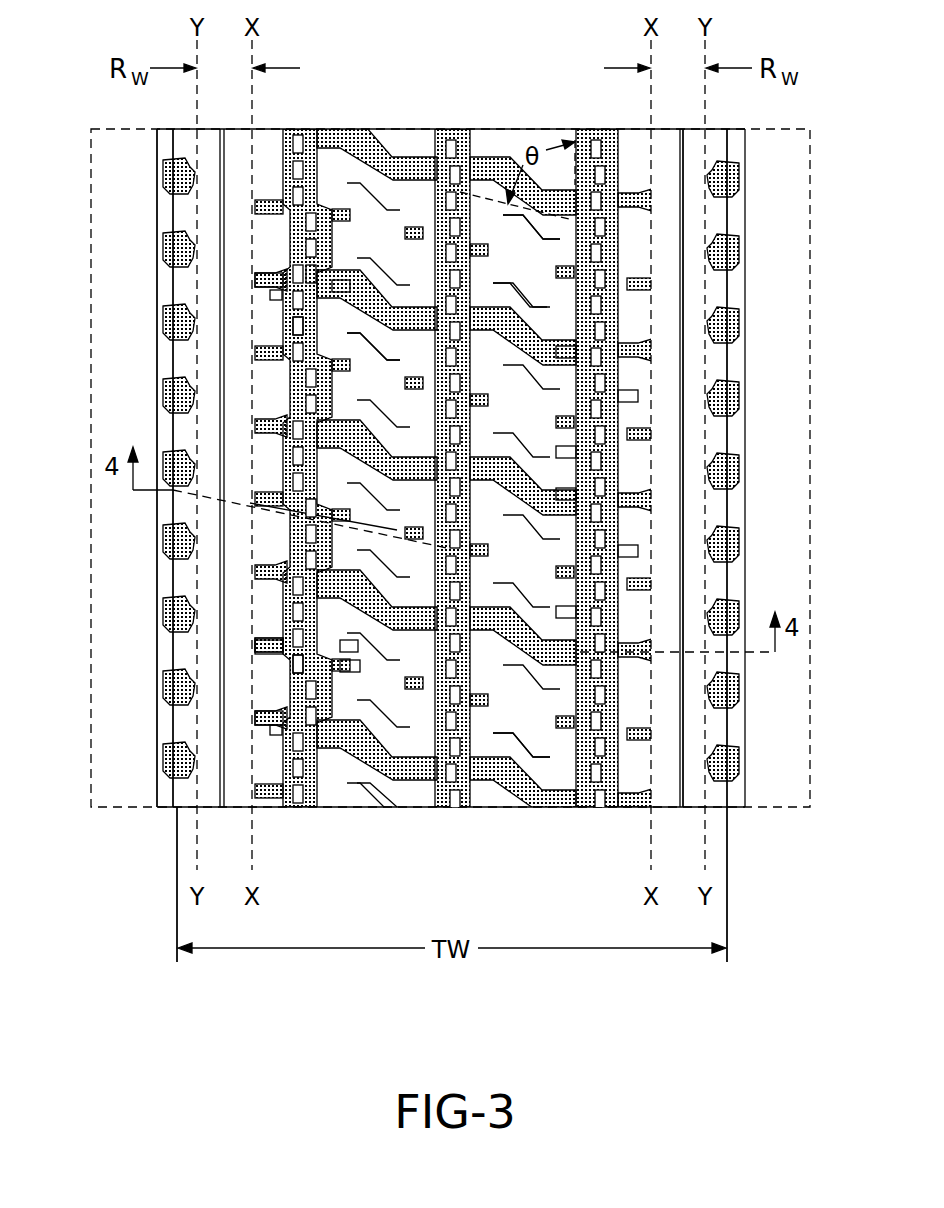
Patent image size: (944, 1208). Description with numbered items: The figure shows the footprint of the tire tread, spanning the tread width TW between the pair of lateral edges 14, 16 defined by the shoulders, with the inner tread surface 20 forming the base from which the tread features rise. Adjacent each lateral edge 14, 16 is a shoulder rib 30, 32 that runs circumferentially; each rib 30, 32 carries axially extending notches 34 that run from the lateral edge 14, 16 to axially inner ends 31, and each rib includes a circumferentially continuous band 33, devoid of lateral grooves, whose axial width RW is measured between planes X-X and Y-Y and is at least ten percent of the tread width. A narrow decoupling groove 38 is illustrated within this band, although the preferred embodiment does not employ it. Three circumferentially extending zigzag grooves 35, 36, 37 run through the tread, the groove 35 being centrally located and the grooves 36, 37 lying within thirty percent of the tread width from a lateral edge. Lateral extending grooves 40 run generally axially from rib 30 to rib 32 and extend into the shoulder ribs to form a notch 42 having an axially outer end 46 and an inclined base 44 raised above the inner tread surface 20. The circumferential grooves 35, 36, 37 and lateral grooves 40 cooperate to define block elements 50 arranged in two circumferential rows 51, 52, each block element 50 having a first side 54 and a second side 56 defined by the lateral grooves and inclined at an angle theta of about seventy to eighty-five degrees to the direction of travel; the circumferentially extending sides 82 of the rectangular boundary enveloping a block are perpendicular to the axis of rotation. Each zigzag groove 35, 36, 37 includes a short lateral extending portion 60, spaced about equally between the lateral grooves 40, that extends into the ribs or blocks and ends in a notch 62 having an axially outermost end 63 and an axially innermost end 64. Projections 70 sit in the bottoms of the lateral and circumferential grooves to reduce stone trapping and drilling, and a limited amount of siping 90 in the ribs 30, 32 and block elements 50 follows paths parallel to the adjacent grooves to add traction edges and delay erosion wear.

The lateral edge 14 is at (176, 908).
The lateral edge 16 is at (726, 908).
The inner tread surface 20 is at (313, 129).
The rib 30 is at (237, 167).
The axially inner ends 31 is at (165, 388).
The rib 32 is at (692, 152).
The circumferentially continuous band 33 is at (210, 513).
The axially extending notches 34 is at (170, 398).
The circumferentially extending zigzag groove 35 is at (449, 135).
The circumferentially extending zigzag groove 36 is at (598, 133).
The circumferentially extending zigzag groove 37 is at (298, 129).
The decoupling groove 38 is at (218, 807).
The lateral extending groove 40 is at (312, 282).
The notch 42 is at (332, 287).
The base 44 is at (278, 296).
The axially outer end 46 is at (255, 282).
The block element 50 is at (494, 193).
The circumferential row 51 is at (501, 803).
The circumferential row 52 is at (360, 803).
The first side 54 is at (565, 358).
The second side 56 is at (565, 497).
The short lateral extending portion 60 is at (287, 663).
The notch 62 is at (353, 665).
The axially outermost end 63 is at (258, 648).
The axially innermost end 64 is at (340, 673).
The projections 70 is at (473, 770).
The circumferentially extending sides 82 is at (307, 327).
The siping 90 is at (576, 455).